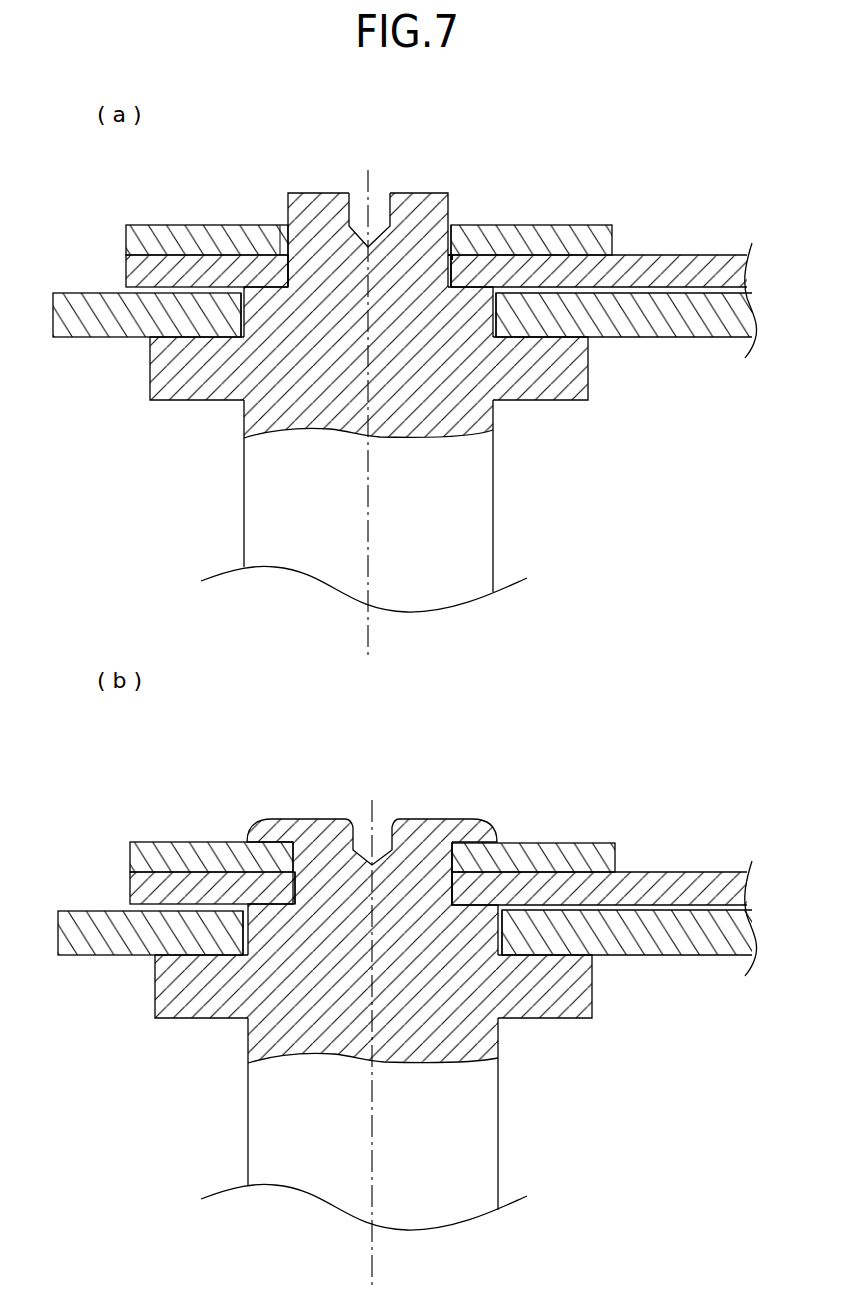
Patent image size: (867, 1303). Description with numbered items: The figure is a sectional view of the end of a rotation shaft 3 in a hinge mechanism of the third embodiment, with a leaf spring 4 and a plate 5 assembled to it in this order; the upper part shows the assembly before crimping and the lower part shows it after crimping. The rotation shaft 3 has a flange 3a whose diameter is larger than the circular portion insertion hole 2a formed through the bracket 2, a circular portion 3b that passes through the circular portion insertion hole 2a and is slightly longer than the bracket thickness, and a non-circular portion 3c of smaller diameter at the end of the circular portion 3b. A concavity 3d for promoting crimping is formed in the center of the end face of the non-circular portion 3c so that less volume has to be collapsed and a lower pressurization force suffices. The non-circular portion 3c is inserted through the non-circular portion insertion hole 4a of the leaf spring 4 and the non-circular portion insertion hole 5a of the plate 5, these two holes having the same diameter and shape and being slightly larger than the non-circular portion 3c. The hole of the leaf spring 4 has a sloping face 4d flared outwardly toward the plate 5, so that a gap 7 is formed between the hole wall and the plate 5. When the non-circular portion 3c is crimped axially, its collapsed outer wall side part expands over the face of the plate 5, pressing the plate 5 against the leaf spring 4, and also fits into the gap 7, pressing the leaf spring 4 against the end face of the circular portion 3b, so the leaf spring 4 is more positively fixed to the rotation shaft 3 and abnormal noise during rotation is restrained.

The bracket 2 is at (652, 337).
The circular portion insertion hole 2a is at (260, 330).
The rotation shaft 3 is at (493, 523).
The flange 3a is at (172, 390).
The circular portion 3b is at (272, 302).
The non-circular portion 3c is at (330, 238).
The concavity for promoting crimping 3d is at (360, 205).
The leaf spring 4 is at (692, 268).
The non-circular portion insertion hole of the leaf spring 4a is at (447, 285).
The sloping face 4d is at (288, 263).
The plate 5 is at (567, 237).
The non-circular portion insertion hole of the plate 5a is at (449, 226).
The gap 7 is at (453, 253).